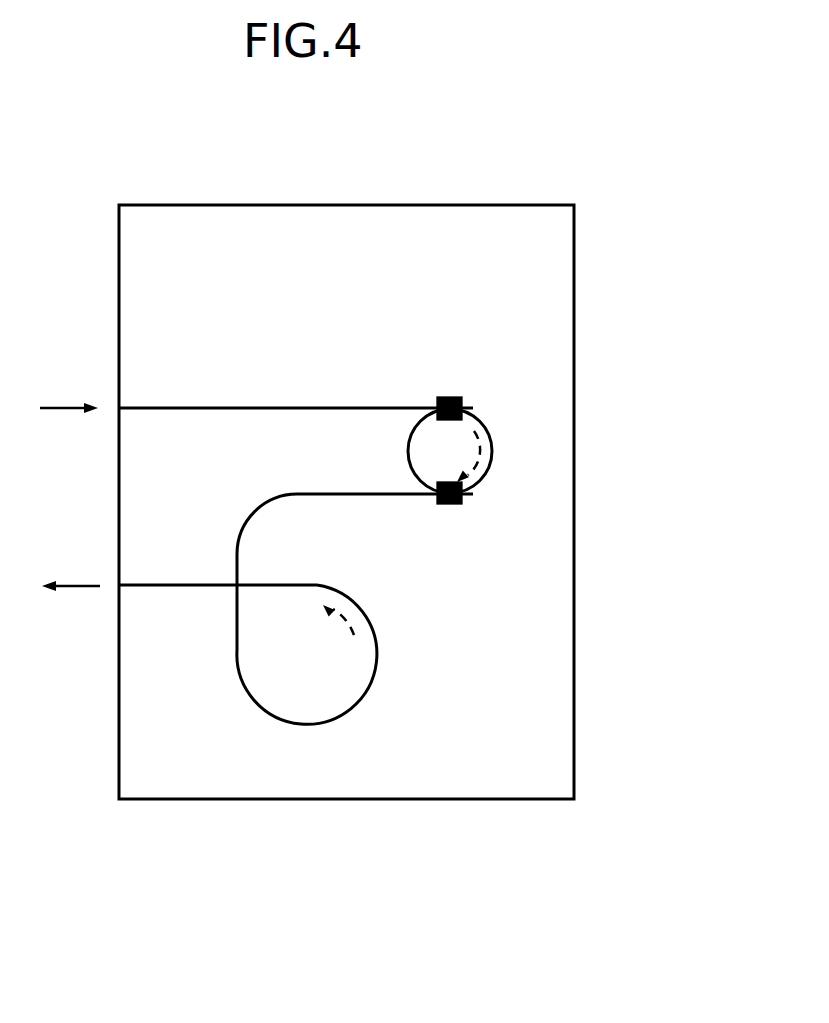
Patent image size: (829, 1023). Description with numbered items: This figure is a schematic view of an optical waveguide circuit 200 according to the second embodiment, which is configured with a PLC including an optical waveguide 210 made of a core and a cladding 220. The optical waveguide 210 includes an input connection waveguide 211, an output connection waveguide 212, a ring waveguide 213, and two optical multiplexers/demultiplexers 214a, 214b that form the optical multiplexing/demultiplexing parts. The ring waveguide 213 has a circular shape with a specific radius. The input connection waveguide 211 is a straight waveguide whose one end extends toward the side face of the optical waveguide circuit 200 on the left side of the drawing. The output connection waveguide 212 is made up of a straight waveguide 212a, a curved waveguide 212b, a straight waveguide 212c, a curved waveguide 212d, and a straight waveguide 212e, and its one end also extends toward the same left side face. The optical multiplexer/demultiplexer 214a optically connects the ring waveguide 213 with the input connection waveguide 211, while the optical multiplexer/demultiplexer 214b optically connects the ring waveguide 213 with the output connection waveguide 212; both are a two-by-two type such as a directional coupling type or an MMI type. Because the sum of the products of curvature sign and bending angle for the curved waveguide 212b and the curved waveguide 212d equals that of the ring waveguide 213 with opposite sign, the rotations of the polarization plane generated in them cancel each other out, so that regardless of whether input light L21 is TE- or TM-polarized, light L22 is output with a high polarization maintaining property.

The optical waveguide circuit 200 is at (508, 181).
The optical waveguide 210 is at (392, 346).
The input connection waveguide 211 is at (284, 406).
The output connection waveguide 212 is at (390, 660).
The straight waveguide 212a is at (360, 493).
The curved waveguide 212b is at (259, 511).
The straight waveguide 212c is at (236, 604).
The curved waveguide 212d is at (344, 712).
The straight waveguide 212e is at (176, 584).
The ring waveguide 213 is at (497, 457).
The optical multiplexer/demultiplexer 214a is at (449, 393).
The optical multiplexer/demultiplexer 214b is at (450, 508).
The cladding 220 is at (512, 783).
The input light L21 is at (60, 406).
The output light L22 is at (74, 584).